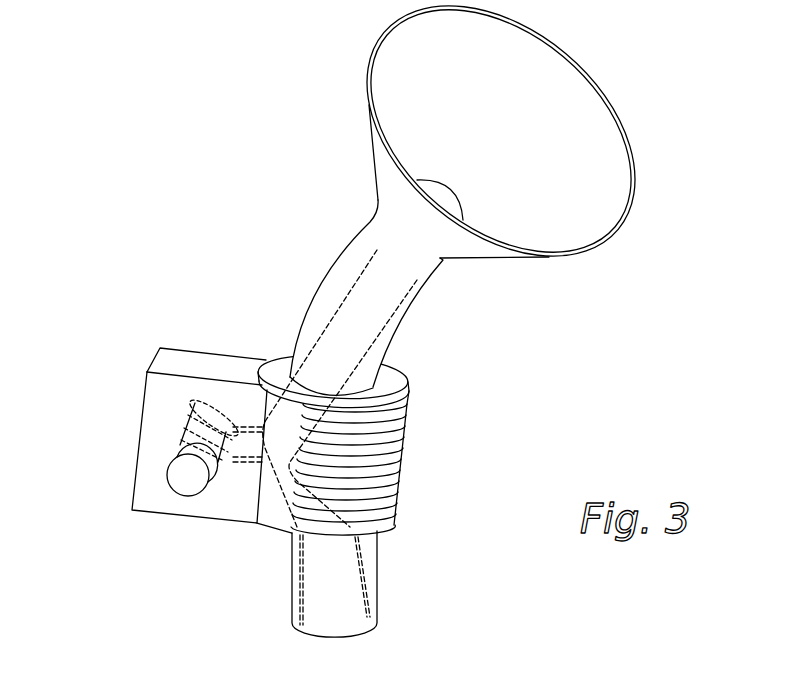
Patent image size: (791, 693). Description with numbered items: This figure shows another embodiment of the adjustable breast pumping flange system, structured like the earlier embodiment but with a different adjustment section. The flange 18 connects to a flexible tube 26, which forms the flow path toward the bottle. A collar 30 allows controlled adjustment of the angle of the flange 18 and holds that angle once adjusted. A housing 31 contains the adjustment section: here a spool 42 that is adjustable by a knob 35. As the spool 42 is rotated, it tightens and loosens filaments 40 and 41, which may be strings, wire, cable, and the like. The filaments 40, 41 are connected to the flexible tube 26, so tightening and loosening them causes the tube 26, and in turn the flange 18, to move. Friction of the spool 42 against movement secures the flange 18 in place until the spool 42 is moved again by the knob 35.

The flange 18 is at (630, 153).
The flexible tube 26 is at (432, 280).
The collar 30 is at (357, 503).
The housing 31 is at (150, 497).
The knob 35 is at (192, 487).
The filament 40 is at (320, 330).
The filament 41 is at (300, 596).
The spool 42 is at (170, 440).